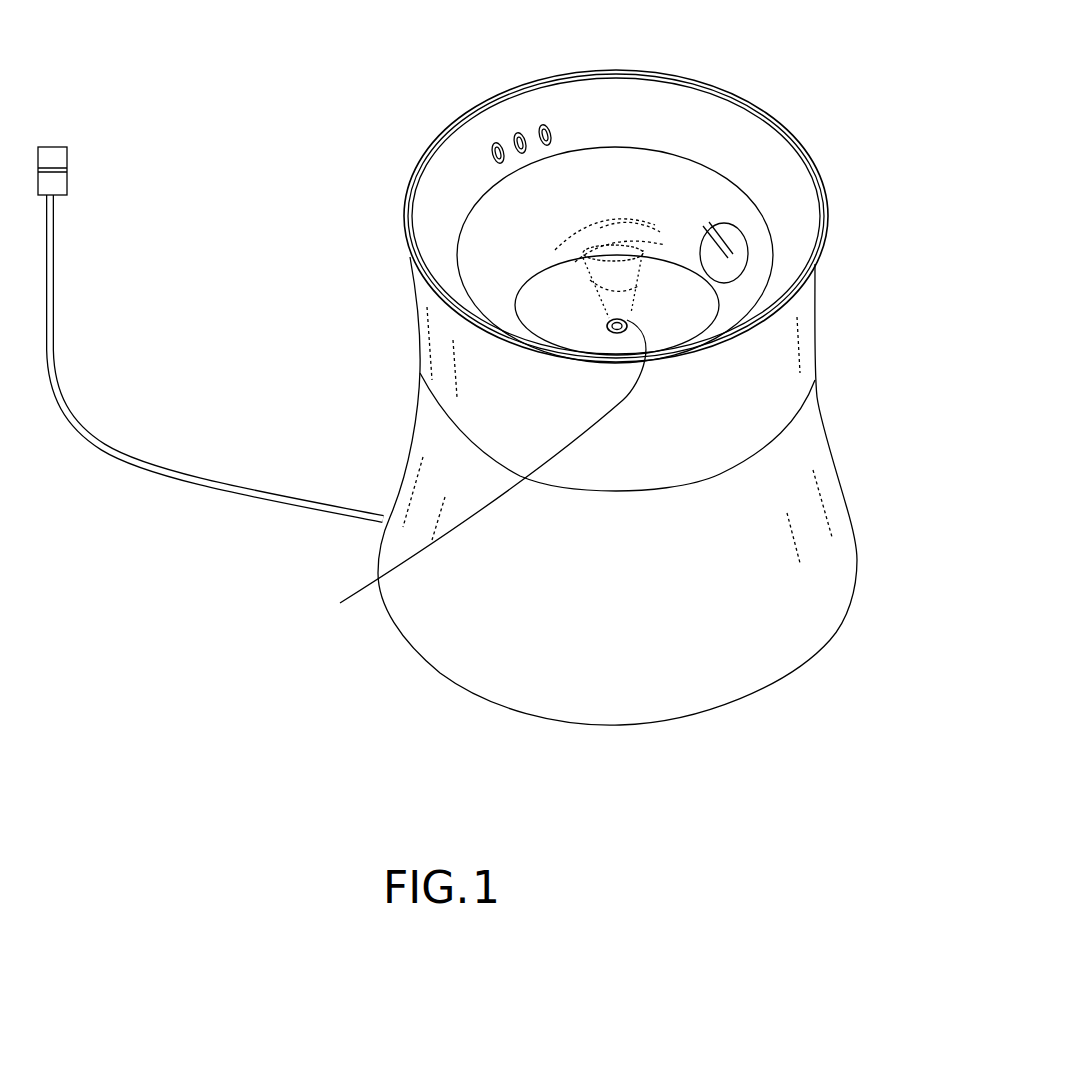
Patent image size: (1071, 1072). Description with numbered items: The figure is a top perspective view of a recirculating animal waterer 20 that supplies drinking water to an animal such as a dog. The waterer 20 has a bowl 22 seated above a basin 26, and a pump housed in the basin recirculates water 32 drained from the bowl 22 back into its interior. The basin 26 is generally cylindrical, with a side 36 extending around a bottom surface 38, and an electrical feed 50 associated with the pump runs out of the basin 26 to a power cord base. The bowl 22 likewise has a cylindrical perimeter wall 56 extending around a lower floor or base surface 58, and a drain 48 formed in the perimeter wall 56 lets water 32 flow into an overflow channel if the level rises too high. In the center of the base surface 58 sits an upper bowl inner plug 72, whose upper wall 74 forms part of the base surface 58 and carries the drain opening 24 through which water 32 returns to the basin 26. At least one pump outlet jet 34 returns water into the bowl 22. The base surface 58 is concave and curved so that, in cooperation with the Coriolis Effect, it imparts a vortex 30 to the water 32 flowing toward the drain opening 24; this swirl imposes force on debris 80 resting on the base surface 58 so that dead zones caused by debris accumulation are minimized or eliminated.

The waterer 20 is at (292, 169).
The bowl 22 is at (400, 318).
The drain opening 24 is at (608, 318).
The basin 26 is at (402, 434).
The vortex 30 is at (603, 240).
The water 32 is at (740, 285).
The pump outlet jet 34 is at (743, 240).
The side 36 is at (421, 407).
The bottom surface 38 is at (447, 670).
The drain 48 is at (491, 148).
The electrical feed 50 is at (142, 455).
The perimeter wall 56 is at (805, 312).
The base surface 58 is at (733, 300).
The upper bowl inner plug 72 is at (528, 302).
The upper wall 74 is at (690, 330).
The debris 80 is at (469, 472).